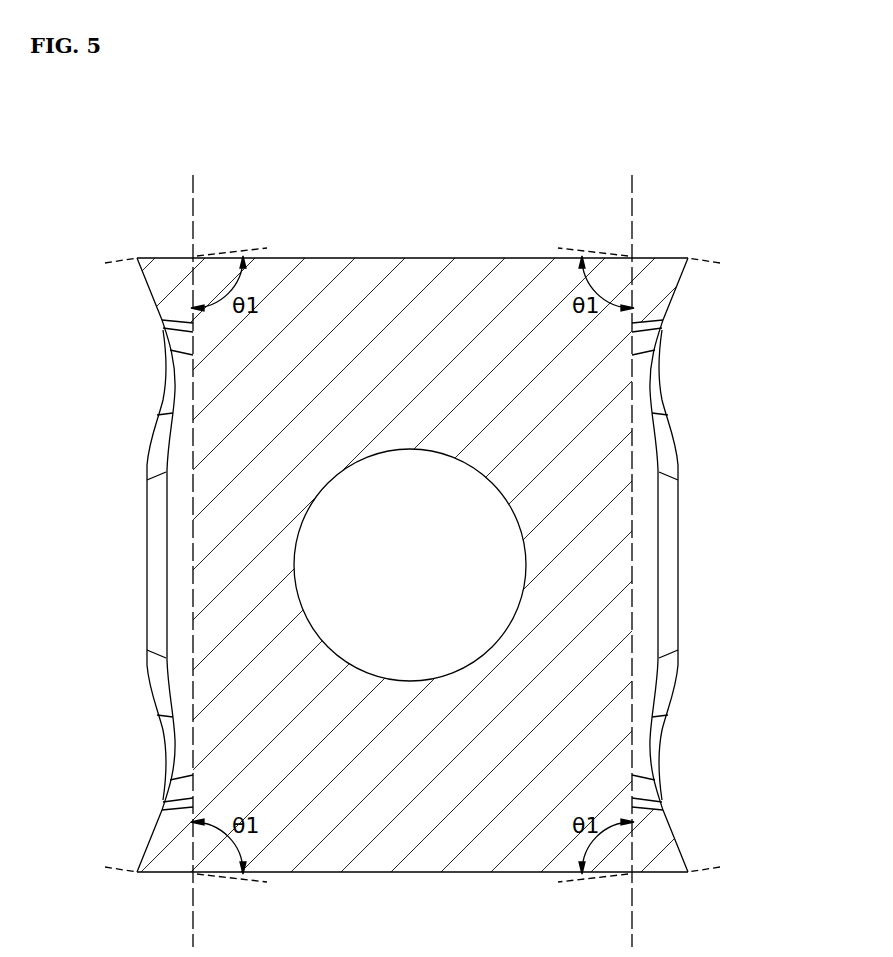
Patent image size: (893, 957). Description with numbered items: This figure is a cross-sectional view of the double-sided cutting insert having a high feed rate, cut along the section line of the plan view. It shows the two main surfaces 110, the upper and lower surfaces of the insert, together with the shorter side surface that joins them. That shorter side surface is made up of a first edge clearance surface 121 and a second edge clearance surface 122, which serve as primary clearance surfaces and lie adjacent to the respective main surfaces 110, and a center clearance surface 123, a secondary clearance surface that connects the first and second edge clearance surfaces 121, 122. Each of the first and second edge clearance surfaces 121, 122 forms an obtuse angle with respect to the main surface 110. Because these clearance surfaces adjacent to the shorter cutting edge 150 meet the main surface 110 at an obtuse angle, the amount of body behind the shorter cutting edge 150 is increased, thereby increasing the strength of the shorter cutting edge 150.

The main surface 110 is at (193, 538).
The first edge clearance surface 121 is at (645, 258).
The second edge clearance surface 122 is at (158, 256).
The center clearance surface 123 is at (482, 258).
The shorter cutting edge 150 is at (137, 258).